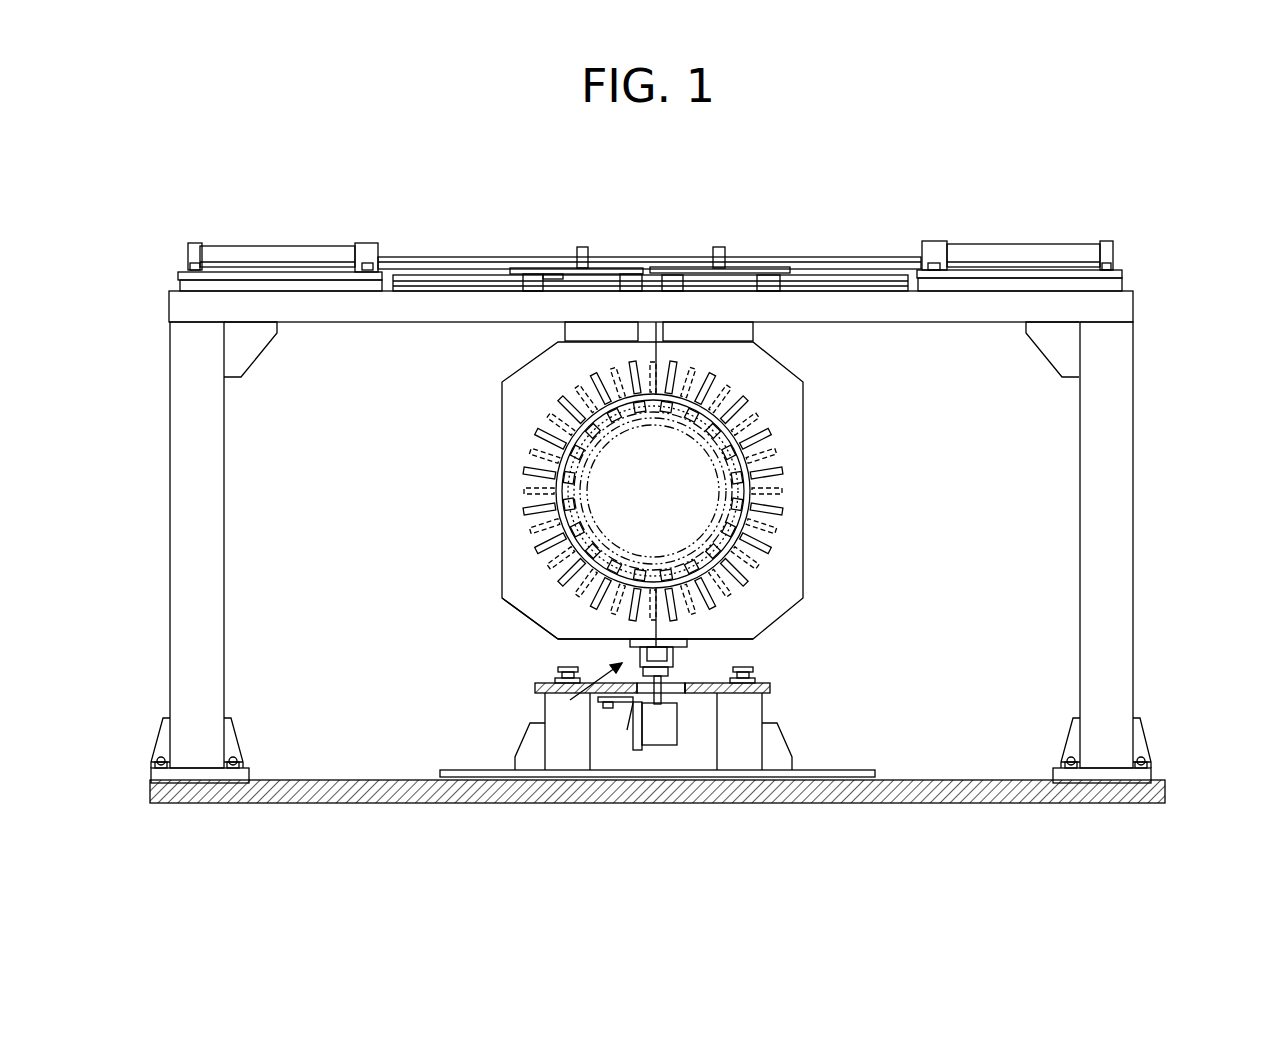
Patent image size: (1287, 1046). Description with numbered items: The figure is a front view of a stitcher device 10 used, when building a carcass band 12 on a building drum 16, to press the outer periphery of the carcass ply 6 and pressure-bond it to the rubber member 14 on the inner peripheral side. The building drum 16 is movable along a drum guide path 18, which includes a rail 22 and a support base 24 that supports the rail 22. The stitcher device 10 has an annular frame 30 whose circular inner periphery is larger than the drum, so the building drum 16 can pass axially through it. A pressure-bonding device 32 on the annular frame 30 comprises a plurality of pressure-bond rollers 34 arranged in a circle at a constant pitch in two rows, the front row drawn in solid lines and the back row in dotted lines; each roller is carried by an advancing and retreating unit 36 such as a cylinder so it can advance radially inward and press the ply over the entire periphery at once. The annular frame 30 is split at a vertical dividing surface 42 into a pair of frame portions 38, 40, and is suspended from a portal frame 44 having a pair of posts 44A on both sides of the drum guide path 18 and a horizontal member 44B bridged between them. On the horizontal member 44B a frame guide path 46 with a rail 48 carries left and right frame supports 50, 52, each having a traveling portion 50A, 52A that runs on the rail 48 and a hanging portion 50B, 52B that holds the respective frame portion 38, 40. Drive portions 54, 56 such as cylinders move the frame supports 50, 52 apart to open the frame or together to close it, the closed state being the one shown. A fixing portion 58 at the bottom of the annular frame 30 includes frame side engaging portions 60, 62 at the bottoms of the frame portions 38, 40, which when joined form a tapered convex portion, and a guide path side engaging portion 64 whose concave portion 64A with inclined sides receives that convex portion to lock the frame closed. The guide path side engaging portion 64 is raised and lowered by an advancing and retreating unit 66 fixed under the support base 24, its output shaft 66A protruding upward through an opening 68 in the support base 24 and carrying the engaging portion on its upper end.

The stitcher device 10 is at (620, 159).
The carcass ply 6 is at (533, 533).
The carcass band 12 is at (742, 511).
The rubber member 14 is at (535, 500).
The building drum 16 is at (540, 577).
The drum guide path 18 is at (517, 698).
The rail 22 is at (752, 673).
The support base 24 is at (765, 698).
The annular frame 30 is at (803, 407).
The pressure-bonding device 32 is at (760, 447).
The pressure-bond rollers 34 is at (552, 440).
The advancing and retreating unit 36 is at (735, 550).
The frame portion 38 is at (523, 610).
The frame portion 40 is at (792, 610).
The dividing surface 42 is at (657, 352).
The portal frame 44 is at (1133, 302).
The posts 44A is at (178, 570).
The horizontal member 44B is at (984, 322).
The frame guide path 46 is at (870, 258).
The rail 48 is at (810, 262).
The frame support 50 is at (561, 241).
The traveling portion 50A is at (532, 270).
The hanging portion 50B is at (563, 332).
The frame support 52 is at (720, 238).
The traveling portion 52A is at (703, 267).
The hanging portion 52B is at (735, 329).
The drive portion 54 is at (267, 250).
The drive portion 56 is at (1018, 250).
The fixing portion 58 is at (580, 684).
The frame side engaging portion 60 is at (643, 648).
The frame side engaging portion 62 is at (673, 657).
The guide path side engaging portion 64 is at (730, 700).
The concave portion 64A is at (680, 690).
The advancing and retreating unit 66 is at (650, 745).
The output shaft 66A is at (658, 676).
The opening 68 is at (634, 683).